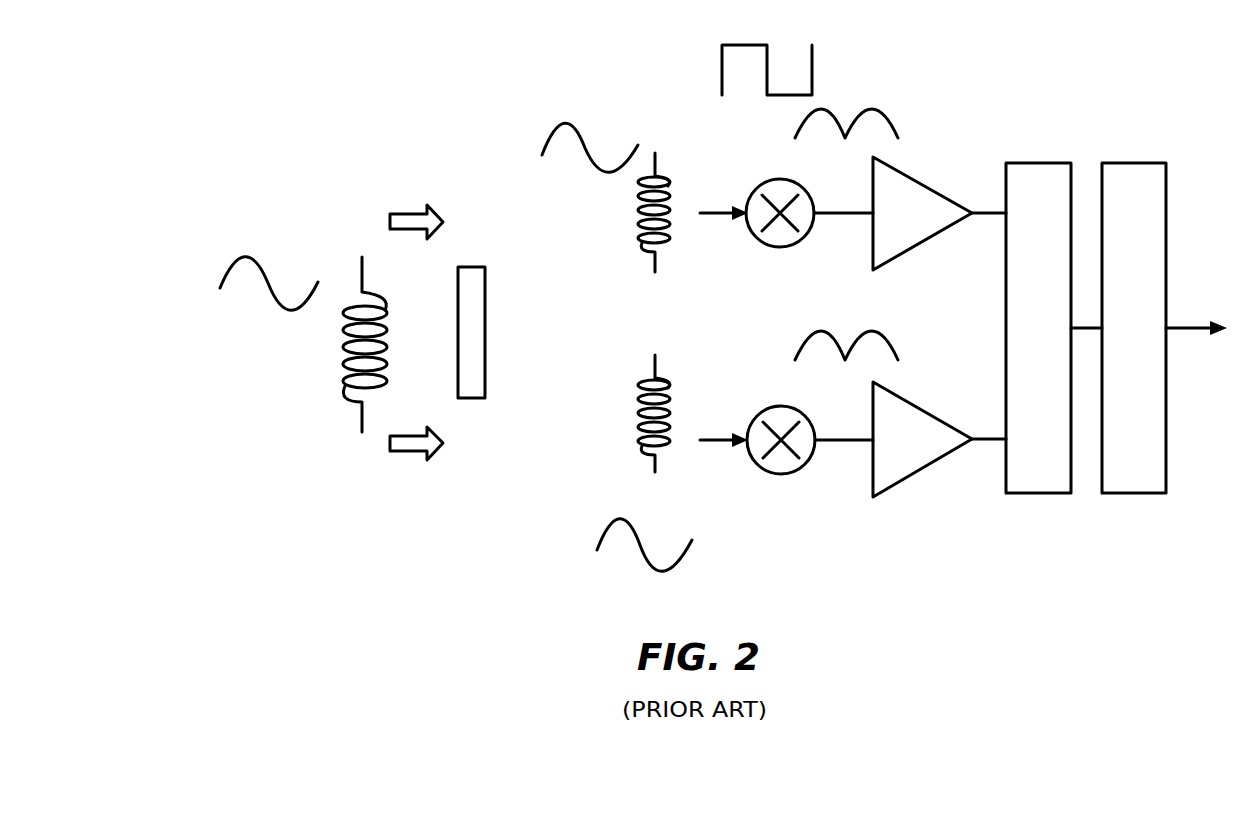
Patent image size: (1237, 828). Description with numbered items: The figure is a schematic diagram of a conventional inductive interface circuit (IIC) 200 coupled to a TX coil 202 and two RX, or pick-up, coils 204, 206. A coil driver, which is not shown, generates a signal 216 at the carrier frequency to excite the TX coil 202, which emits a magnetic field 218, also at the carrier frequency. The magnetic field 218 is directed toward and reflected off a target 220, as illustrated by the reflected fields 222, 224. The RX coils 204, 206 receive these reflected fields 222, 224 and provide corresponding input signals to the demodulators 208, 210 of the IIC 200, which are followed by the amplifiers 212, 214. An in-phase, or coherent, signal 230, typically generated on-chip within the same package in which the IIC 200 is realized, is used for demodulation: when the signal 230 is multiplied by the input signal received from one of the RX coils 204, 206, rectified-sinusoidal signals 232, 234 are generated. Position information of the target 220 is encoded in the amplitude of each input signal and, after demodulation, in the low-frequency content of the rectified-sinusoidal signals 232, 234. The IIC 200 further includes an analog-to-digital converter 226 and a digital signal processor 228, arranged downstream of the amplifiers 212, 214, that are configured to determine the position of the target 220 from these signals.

The inductive interface circuit 200 is at (366, 108).
The TX coil 202 is at (343, 390).
The RX coil 204 is at (638, 208).
The RX coil 206 is at (638, 405).
The demodulator 208 is at (747, 203).
The demodulator 210 is at (778, 476).
The amplifier 212 is at (945, 197).
The amplifier 214 is at (940, 420).
The signal with carrier frequency 216 is at (262, 310).
The magnetic field 218 is at (390, 213).
The target 220 is at (478, 400).
The reflected field 222 is at (548, 137).
The reflected field 224 is at (687, 553).
The analog-to-digital converter 226 is at (1038, 328).
The digital signal processor 228 is at (1149, 328).
The in-phase signal 230 is at (722, 50).
The rectified-sinusoidal signal 232 is at (880, 105).
The rectified-sinusoidal signal 234 is at (877, 325).